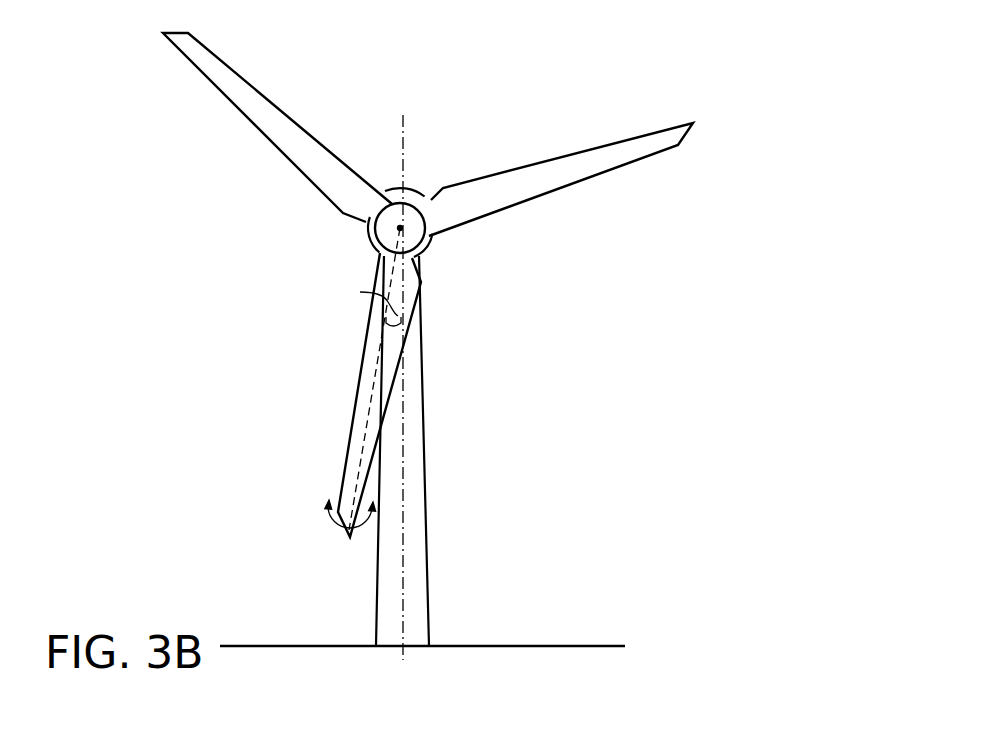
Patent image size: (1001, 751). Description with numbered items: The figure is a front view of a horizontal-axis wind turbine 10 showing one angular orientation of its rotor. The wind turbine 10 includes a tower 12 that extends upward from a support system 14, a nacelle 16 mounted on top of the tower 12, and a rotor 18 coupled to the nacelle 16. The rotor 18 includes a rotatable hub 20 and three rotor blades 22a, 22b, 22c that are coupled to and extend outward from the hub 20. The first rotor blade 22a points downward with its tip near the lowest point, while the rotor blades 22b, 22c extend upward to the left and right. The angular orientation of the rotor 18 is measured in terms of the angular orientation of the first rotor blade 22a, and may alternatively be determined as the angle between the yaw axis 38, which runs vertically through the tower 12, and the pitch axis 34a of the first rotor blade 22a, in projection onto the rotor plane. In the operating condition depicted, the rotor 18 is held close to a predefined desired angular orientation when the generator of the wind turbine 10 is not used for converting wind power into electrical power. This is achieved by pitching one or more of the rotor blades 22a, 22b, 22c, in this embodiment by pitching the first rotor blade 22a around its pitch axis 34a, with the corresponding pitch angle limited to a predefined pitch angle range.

The wind turbine 10 is at (435, 91).
The tower 12 is at (417, 578).
The support system 14 is at (577, 646).
The nacelle 16 is at (413, 189).
The rotor 18 is at (455, 282).
The rotatable hub 20 is at (396, 205).
The first rotor blade 22a is at (324, 388).
The rotor blade 22b is at (312, 158).
The rotor blade 22c is at (612, 158).
The pitch axis 34a is at (367, 455).
The yaw axis 38 is at (402, 610).